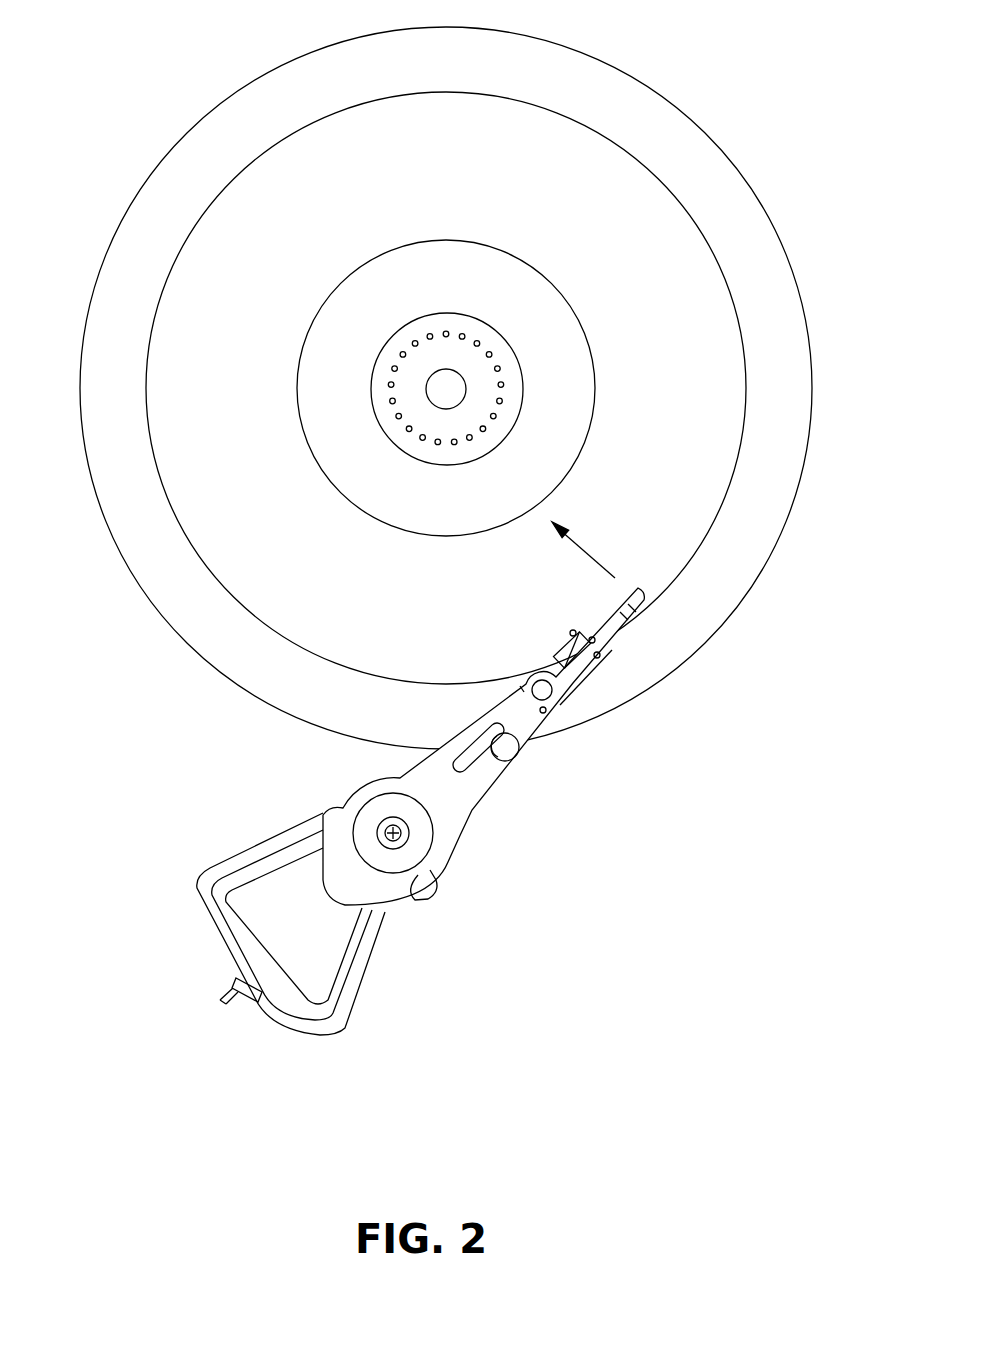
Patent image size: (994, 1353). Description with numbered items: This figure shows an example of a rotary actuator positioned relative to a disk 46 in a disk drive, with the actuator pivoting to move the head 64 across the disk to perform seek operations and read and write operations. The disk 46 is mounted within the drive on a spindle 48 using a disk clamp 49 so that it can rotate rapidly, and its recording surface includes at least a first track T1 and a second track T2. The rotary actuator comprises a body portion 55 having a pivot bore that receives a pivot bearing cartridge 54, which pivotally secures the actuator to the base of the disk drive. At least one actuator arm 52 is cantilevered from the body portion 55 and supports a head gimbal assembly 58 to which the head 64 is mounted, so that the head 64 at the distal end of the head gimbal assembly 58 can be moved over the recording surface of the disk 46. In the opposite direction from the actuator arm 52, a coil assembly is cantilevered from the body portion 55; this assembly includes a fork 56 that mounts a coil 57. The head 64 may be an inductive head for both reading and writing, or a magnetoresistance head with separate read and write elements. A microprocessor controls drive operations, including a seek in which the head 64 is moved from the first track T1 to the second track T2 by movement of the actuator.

The disk 46 is at (177, 602).
The spindle 48 is at (425, 392).
The disk clamp 49 is at (328, 420).
The actuator arm 52 is at (460, 797).
The pivot bearing cartridge 54 is at (407, 832).
The body portion 55 is at (420, 863).
The fork 56 is at (373, 945).
The coil 57 is at (328, 1012).
The head gimbal assembly 58 is at (620, 628).
The head 64 is at (645, 592).
The first track T1 is at (748, 378).
The second track T2 is at (595, 366).